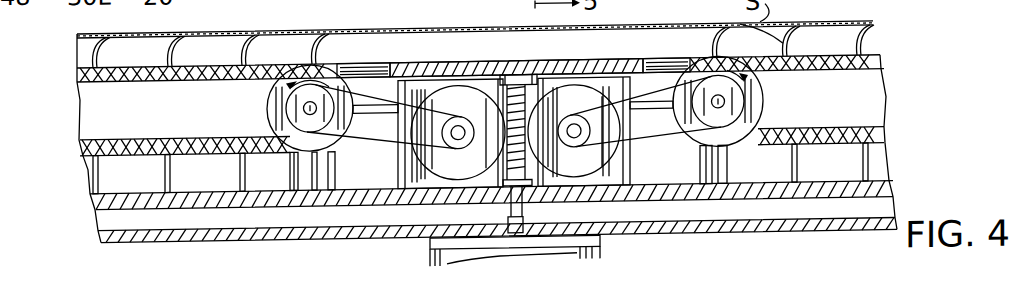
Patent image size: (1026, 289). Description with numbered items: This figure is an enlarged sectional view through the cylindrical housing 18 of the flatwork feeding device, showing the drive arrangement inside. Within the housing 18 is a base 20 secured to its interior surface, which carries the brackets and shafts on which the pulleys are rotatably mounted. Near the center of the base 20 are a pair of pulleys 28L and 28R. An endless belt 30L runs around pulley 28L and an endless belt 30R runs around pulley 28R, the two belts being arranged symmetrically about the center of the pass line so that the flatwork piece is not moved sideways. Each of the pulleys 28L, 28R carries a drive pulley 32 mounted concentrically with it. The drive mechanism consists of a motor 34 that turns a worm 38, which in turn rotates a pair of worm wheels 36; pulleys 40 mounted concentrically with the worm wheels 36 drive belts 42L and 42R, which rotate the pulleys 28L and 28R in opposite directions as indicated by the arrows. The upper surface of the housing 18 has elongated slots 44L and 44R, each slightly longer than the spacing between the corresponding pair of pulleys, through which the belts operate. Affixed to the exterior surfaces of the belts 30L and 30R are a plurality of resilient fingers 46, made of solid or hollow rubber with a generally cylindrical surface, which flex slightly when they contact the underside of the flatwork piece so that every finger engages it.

The cylindrical housing 18 is at (427, 48).
The base 20 is at (727, 197).
The left center pulley 28L is at (268, 119).
The right center pulley 28R is at (763, 127).
The left endless belt 30L is at (148, 77).
The right endless belt 30R is at (832, 76).
The drive pulley 32 is at (298, 108).
The motor 34 is at (585, 264).
The worm wheel 36 is at (467, 104).
The worm 38 is at (530, 80).
The pulley 40 is at (468, 145).
The left drive belt 42L is at (388, 146).
The right drive belt 42R is at (648, 143).
The left elongated slot 44L is at (377, 75).
The right elongated slot 44R is at (682, 52).
The resilient fingers 46 is at (240, 53).